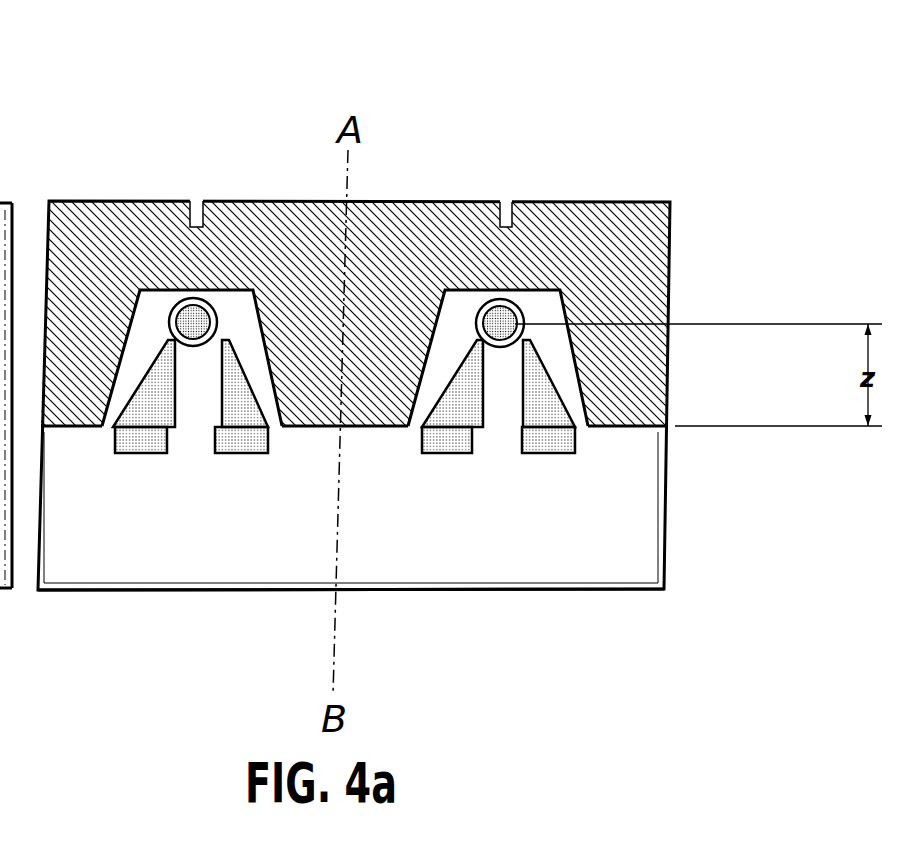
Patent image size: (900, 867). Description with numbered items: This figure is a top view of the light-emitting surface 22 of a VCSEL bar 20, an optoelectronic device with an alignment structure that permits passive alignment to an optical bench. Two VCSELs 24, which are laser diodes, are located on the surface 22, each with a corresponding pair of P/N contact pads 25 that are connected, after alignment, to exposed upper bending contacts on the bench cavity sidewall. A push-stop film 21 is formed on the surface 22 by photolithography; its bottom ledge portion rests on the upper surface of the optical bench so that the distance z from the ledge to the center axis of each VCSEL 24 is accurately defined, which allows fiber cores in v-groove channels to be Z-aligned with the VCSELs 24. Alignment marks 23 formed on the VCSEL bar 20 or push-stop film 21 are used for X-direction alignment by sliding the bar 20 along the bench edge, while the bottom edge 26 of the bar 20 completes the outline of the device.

The VCSEL bar 20 is at (670, 446).
The push-stop film 21 is at (607, 270).
The top light-emitting surface 22 is at (422, 545).
The alignment marks 23 is at (503, 200).
The VCSEL 24 is at (528, 331).
The P/N contact pads 25 is at (552, 440).
The bottom surface 26 is at (457, 590).